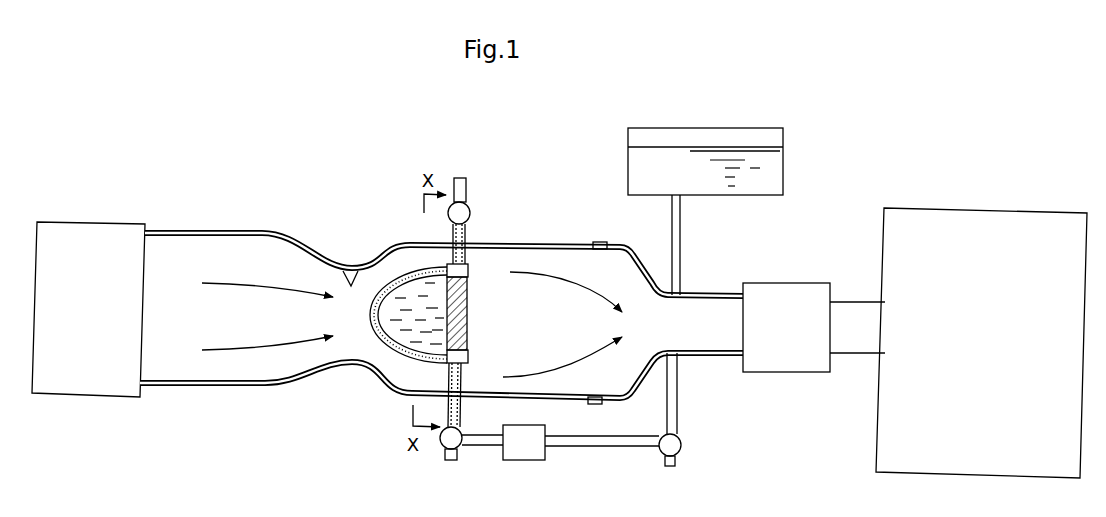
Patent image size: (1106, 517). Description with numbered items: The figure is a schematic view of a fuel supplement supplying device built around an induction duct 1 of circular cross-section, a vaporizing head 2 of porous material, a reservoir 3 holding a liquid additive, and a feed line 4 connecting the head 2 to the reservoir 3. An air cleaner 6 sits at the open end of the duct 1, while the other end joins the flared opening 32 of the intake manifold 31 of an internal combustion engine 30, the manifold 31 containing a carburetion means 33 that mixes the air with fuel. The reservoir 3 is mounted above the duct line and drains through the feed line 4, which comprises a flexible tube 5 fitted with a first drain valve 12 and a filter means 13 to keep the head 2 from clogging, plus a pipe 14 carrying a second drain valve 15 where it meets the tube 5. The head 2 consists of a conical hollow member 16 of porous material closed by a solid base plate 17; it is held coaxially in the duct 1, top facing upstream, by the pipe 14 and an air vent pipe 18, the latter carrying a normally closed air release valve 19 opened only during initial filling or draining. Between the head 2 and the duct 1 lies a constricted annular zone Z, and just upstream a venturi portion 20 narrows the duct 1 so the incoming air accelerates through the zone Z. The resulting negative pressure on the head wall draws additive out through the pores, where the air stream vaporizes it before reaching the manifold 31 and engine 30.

The induction duct 1 is at (253, 230).
The vaporizing head 2 is at (412, 366).
The reservoir 3 is at (783, 167).
The feed line 4 is at (598, 448).
The tube 5 is at (677, 430).
The air cleaner 6 is at (63, 395).
The first drain valve 12 is at (663, 458).
The filter means 13 is at (530, 460).
The pipe 14 is at (458, 413).
The second drain valve 15 is at (443, 445).
The conical hollow member 16 is at (395, 277).
The base plate 17 is at (470, 283).
The air vent pipe 18 is at (467, 180).
The air release valve 19 is at (469, 207).
The venturi portion 20 is at (350, 268).
The internal combustion engine 30 is at (1040, 212).
The intake manifold 31 is at (858, 355).
The flared opening 32 is at (647, 378).
The carburetion means 33 is at (785, 285).
The annular zone Z is at (408, 258).